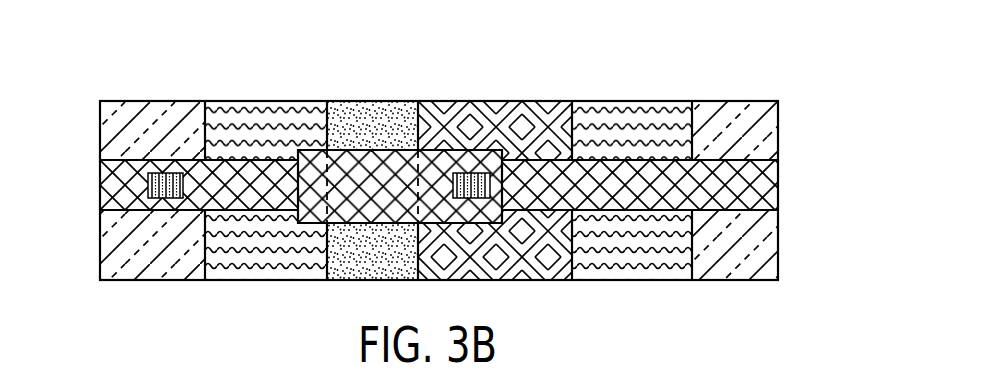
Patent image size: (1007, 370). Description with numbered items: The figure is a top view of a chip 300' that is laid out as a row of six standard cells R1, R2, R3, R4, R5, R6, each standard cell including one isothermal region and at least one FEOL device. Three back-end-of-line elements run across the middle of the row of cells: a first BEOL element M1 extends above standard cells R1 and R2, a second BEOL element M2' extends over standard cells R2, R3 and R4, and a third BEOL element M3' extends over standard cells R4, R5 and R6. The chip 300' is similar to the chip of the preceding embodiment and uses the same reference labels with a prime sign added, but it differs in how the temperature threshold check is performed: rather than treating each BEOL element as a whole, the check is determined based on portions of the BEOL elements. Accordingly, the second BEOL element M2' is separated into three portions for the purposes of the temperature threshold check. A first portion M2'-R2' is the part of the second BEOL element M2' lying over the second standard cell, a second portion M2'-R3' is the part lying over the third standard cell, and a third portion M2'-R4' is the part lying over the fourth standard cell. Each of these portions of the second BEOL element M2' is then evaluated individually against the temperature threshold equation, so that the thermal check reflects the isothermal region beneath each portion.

The chip 300' is at (536, 145).
The first BEOL element M1 is at (199, 185).
The second BEOL element M2' is at (391, 135).
The third BEOL element M3' is at (640, 185).
The standard cell R1 is at (152, 190).
The standard cell R2 is at (266, 190).
The standard cell R3 is at (372, 190).
The standard cell R4 is at (495, 190).
The standard cell R5 is at (632, 190).
The standard cell R6 is at (735, 190).
The first portion M2'-R2' is at (291, 135).
The second portion M2'-R3' is at (376, 135).
The third portion M2'-R4' is at (472, 135).